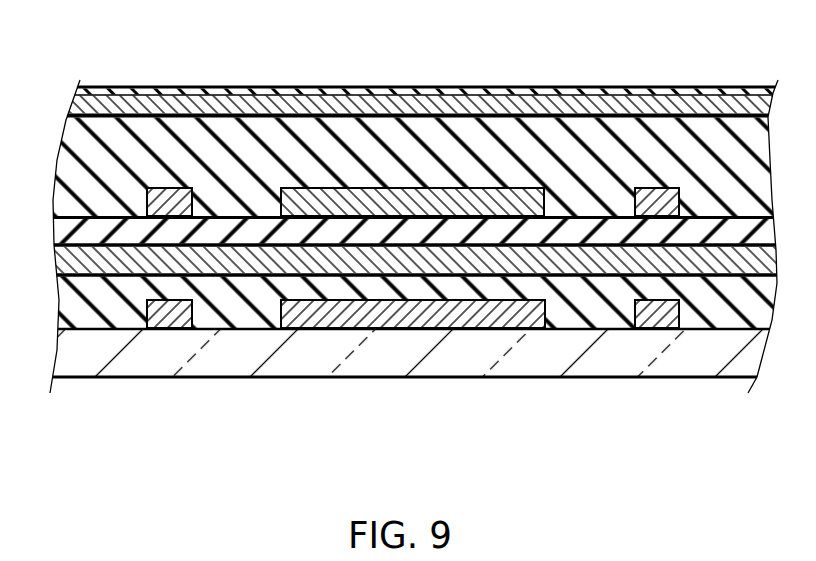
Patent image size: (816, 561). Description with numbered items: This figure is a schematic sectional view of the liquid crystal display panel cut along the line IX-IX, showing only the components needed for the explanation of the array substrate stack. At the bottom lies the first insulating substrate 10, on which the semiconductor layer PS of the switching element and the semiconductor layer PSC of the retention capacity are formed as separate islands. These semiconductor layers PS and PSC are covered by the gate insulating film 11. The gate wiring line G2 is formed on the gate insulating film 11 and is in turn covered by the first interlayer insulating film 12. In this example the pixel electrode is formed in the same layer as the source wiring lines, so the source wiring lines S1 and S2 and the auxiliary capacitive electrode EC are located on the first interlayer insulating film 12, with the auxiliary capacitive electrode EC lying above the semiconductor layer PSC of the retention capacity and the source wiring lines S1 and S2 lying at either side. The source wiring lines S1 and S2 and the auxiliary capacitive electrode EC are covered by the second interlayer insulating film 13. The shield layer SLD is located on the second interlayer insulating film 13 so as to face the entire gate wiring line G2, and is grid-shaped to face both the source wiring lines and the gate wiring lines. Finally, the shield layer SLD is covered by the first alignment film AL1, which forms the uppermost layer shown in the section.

The source wiring line S1 is at (173, 188).
The auxiliary capacitive electrode EC is at (396, 188).
The shield layer SLD is at (553, 104).
The source wiring line S2 is at (670, 188).
The first alignment film AL1 is at (742, 88).
The second interlayer insulating film 13 is at (58, 158).
The first interlayer insulating film 12 is at (61, 228).
The gate wiring line G2 is at (58, 260).
The gate insulating film 11 is at (63, 320).
The first insulating substrate 10 is at (67, 351).
The semiconductor layer of the retention capacity PSC is at (397, 330).
The semiconductor layer PS is at (655, 330).